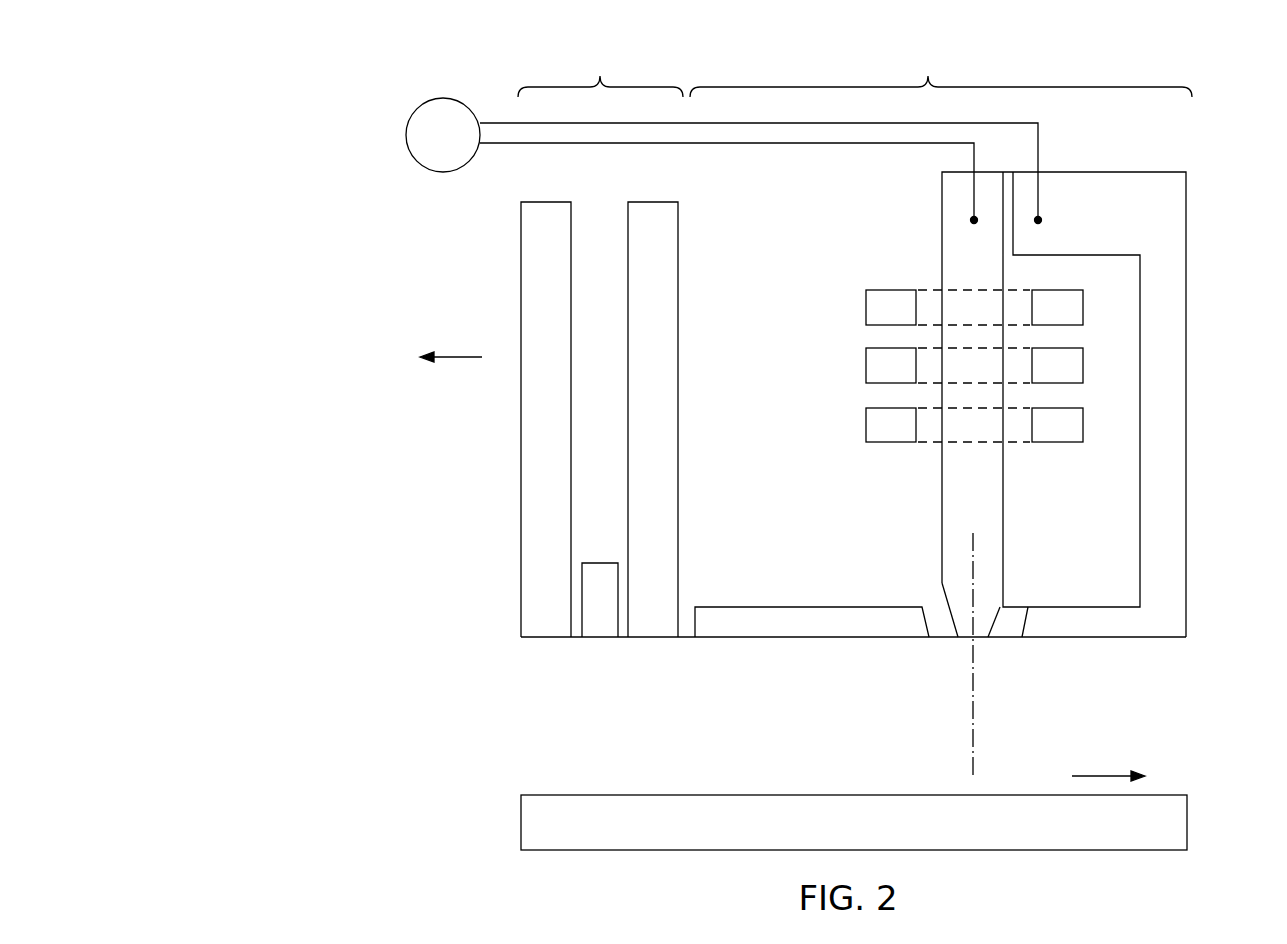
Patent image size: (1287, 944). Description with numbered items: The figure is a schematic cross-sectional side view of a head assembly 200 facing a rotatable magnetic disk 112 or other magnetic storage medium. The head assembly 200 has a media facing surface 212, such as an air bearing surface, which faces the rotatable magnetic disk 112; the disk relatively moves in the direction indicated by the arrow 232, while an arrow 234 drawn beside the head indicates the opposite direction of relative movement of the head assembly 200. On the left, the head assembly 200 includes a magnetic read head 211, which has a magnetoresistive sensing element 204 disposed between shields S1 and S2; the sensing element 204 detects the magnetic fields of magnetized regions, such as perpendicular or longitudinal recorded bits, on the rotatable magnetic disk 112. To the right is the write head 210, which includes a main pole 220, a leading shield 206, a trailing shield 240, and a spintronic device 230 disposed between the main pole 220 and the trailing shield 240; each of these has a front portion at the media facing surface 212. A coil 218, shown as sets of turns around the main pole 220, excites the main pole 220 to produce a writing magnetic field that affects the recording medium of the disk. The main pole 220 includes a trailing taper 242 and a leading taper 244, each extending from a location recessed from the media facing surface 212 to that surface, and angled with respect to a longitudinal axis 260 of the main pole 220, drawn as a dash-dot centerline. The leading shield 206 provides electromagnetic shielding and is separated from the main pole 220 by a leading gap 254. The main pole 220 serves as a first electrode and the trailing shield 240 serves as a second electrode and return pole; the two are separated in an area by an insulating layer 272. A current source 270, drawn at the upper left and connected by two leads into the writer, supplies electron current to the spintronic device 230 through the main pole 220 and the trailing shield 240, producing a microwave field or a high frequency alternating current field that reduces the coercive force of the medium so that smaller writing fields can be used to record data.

The head assembly 200 is at (265, 91).
The current source 270 is at (435, 98).
The insulating layer 272 is at (1008, 177).
The magnetic read head 211 is at (600, 65).
The write head 210 is at (941, 65).
The head motion direction 234 is at (463, 357).
The shield S1 is at (540, 638).
The sensing element 204 is at (595, 638).
The shield S2 is at (650, 638).
The leading shield 206 is at (745, 638).
The media facing surface 212 is at (1098, 640).
The trailing shield 240 is at (1163, 623).
The leading taper 244 is at (947, 613).
The main pole 220 is at (988, 497).
The coil 218 is at (888, 445).
The trailing taper 242 is at (993, 607).
The spintronic device 230 is at (1008, 625).
The leading gap 254 is at (943, 632).
The longitudinal axis 260 is at (972, 742).
The arrow 232 is at (1100, 775).
The rotatable magnetic disk 112 is at (1190, 820).